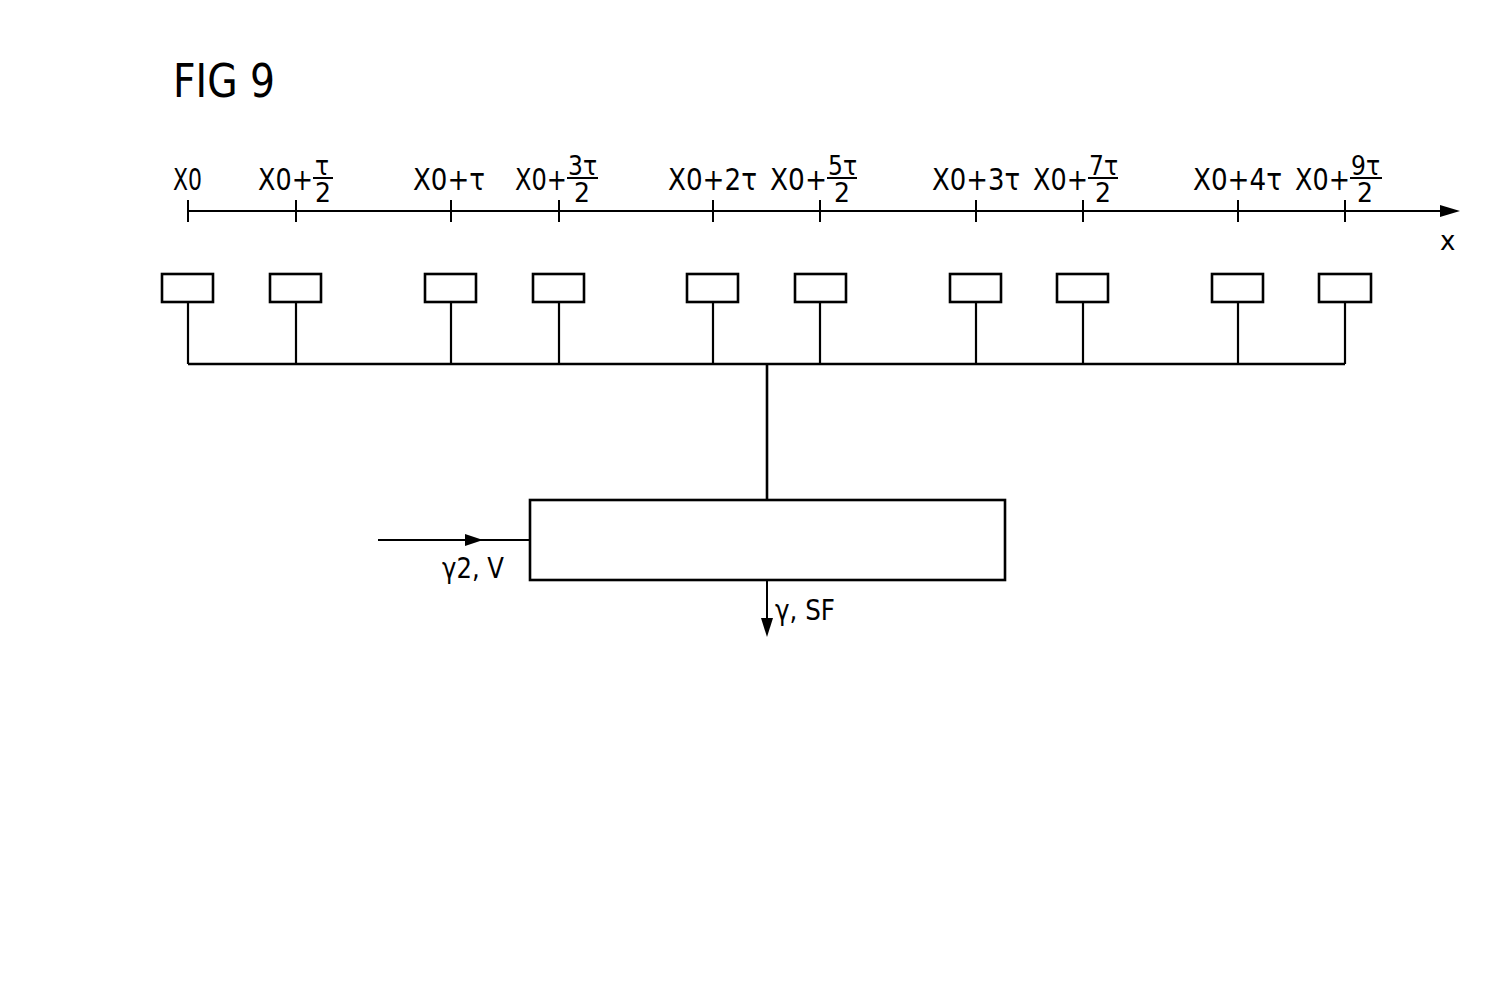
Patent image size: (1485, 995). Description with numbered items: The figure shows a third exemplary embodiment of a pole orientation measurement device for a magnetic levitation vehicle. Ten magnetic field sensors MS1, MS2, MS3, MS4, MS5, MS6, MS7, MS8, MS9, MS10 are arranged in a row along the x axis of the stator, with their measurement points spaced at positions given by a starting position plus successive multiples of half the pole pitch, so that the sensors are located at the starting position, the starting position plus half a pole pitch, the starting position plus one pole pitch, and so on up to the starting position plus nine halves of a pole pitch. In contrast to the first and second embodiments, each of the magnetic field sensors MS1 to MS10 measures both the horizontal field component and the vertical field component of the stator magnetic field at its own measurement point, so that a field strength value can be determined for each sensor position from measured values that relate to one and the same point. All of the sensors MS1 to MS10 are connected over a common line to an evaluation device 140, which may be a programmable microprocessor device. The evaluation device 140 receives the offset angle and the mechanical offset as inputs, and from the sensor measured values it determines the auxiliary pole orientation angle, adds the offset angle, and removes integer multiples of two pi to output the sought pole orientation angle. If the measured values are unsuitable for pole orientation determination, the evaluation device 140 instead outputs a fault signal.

The magnetic field sensor MS1 is at (175, 302).
The magnetic field sensor MS2 is at (310, 302).
The magnetic field sensor MS3 is at (438, 302).
The magnetic field sensor MS4 is at (572, 302).
The magnetic field sensor MS5 is at (700, 302).
The magnetic field sensor MS6 is at (833, 302).
The magnetic field sensor MS7 is at (963, 302).
The magnetic field sensor MS8 is at (1095, 302).
The magnetic field sensor MS9 is at (1226, 302).
The magnetic field sensor MS10 is at (1358, 302).
The evaluation device 140 is at (1005, 543).